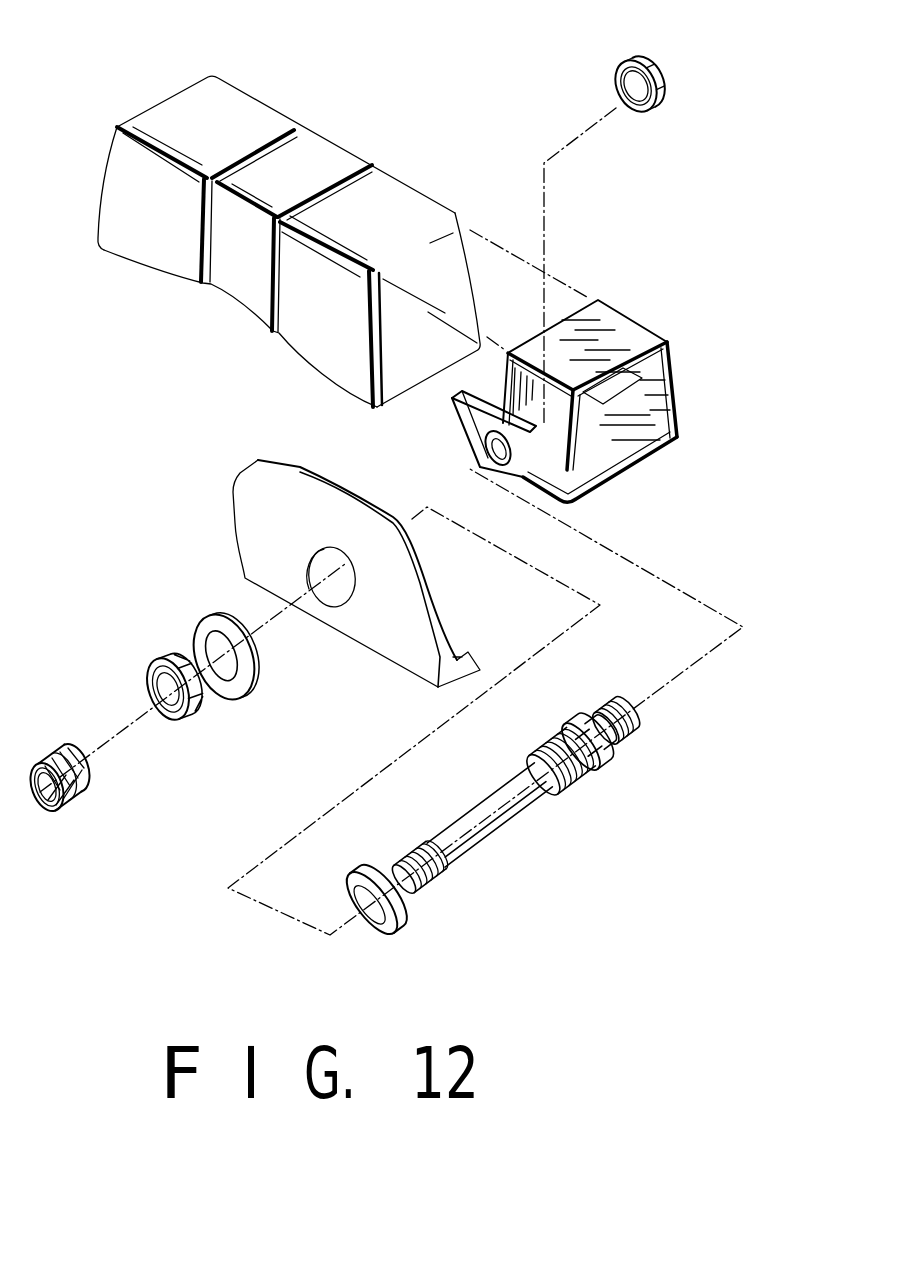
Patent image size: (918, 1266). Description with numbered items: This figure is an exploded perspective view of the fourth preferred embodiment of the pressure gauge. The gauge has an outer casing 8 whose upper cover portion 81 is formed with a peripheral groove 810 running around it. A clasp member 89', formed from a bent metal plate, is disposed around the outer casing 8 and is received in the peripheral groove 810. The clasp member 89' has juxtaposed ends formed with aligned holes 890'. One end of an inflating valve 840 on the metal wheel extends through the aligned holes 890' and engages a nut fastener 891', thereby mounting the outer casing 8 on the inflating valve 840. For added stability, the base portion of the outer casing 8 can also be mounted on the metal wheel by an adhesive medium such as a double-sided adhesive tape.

The outer casing 8 is at (287, 110).
The upper cover portion 81 is at (180, 103).
The peripheral groove 810 is at (332, 162).
The nut fastener 891' is at (693, 84).
The clasp member 89' is at (643, 399).
The aligned holes 890' is at (592, 482).
The inflating valve 840 is at (475, 827).